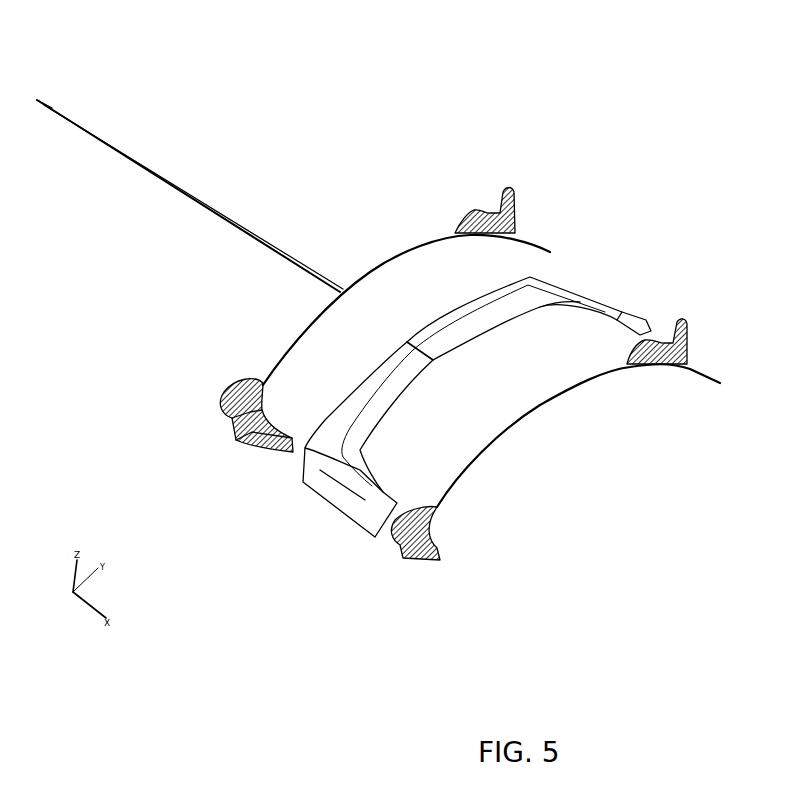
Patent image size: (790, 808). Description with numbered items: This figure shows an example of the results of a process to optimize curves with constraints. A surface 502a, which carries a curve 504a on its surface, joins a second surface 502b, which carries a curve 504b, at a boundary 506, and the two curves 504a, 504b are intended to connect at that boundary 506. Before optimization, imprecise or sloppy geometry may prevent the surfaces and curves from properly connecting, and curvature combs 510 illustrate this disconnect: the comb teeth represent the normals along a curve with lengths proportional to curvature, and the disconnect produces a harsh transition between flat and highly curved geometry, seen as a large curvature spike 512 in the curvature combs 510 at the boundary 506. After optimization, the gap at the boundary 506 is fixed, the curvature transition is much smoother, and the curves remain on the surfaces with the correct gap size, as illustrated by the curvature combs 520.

The curvature combs 510 is at (401, 250).
The curvature spike 512 is at (291, 240).
The surface 502a is at (508, 296).
The surface 502b is at (371, 381).
The curve 504a is at (491, 323).
The curve 504b is at (388, 402).
The boundary 506 is at (408, 339).
The curvature combs 520 is at (498, 454).